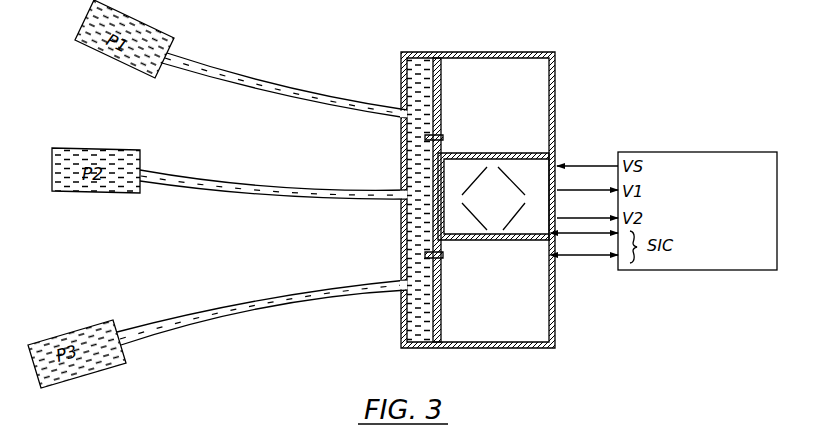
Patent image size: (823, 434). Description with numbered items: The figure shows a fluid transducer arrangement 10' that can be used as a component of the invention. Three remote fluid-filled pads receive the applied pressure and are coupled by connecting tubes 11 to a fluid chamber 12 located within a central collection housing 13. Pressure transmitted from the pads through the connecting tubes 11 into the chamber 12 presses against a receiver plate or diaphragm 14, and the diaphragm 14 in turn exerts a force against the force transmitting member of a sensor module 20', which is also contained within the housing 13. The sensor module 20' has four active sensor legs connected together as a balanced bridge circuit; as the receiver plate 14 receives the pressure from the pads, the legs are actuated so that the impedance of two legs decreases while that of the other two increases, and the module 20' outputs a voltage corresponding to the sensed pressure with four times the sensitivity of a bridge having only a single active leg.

The pressure measuring device 10' is at (506, 178).
The connecting tubes 11 is at (262, 85).
The fluid chamber 12 is at (441, 310).
The central collection housing 13 is at (512, 52).
The receiver plate or diaphragm 14 is at (441, 245).
The sensor module 20' is at (525, 175).